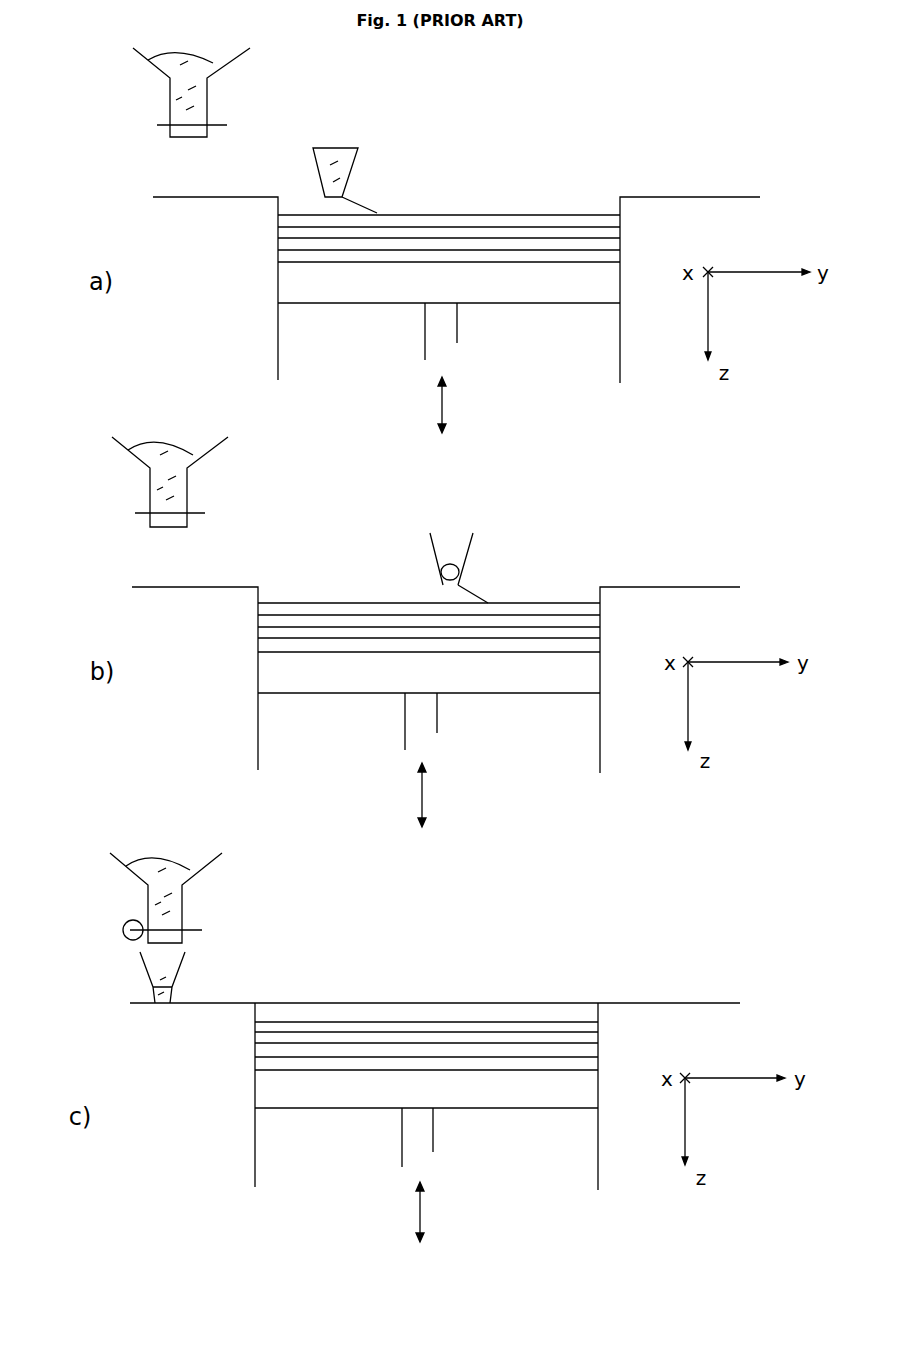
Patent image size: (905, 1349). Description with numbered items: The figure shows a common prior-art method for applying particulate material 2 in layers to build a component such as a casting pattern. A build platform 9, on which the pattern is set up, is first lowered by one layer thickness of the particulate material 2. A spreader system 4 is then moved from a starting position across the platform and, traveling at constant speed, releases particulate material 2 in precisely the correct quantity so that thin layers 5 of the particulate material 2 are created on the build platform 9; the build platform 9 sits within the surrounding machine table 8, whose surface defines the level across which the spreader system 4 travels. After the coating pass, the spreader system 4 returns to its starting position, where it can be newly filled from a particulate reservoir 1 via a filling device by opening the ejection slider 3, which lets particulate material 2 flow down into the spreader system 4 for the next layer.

The particulate reservoir 1 is at (165, 76).
The particulate material 2 is at (314, 148).
The ejection slider 3 is at (163, 125).
The spreader system 4 is at (350, 172).
The thin layers 5 is at (498, 213).
The machine table 8 is at (687, 197).
The build platform 9 is at (517, 280).